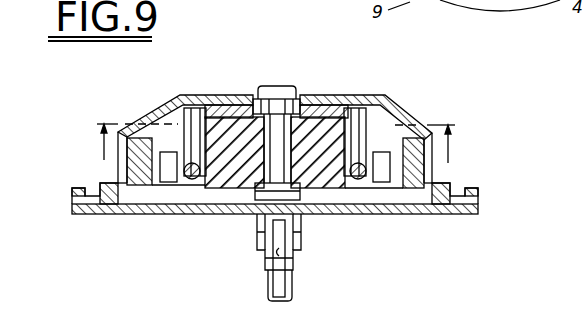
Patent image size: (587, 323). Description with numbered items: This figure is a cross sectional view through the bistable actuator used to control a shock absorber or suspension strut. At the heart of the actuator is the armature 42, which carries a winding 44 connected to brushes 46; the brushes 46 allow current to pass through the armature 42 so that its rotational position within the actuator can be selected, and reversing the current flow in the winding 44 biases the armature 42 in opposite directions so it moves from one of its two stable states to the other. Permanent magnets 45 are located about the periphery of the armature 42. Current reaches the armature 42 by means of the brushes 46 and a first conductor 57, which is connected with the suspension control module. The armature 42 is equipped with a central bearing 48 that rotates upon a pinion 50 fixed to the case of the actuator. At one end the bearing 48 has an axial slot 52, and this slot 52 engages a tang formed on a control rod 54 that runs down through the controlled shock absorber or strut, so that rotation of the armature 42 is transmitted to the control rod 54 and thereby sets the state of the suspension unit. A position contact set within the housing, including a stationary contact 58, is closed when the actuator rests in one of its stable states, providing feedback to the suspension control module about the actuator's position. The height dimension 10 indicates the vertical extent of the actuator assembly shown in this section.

The height dimension 10 is at (274, 143).
The armature 42 is at (232, 185).
The winding 44 is at (325, 120).
The permanent magnets 45 is at (132, 167).
The brushes 46 is at (160, 115).
The central bearing 48 is at (274, 125).
The pinion 50 is at (258, 103).
The axial slot 52 is at (295, 257).
The control rod 54 is at (268, 282).
The first conductor 57 is at (183, 94).
The stationary contact 58 is at (228, 98).